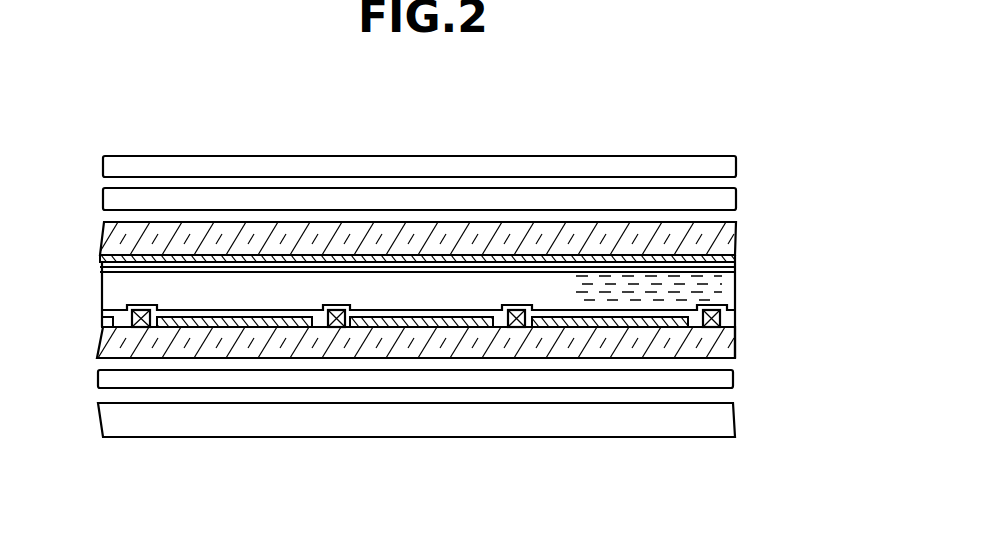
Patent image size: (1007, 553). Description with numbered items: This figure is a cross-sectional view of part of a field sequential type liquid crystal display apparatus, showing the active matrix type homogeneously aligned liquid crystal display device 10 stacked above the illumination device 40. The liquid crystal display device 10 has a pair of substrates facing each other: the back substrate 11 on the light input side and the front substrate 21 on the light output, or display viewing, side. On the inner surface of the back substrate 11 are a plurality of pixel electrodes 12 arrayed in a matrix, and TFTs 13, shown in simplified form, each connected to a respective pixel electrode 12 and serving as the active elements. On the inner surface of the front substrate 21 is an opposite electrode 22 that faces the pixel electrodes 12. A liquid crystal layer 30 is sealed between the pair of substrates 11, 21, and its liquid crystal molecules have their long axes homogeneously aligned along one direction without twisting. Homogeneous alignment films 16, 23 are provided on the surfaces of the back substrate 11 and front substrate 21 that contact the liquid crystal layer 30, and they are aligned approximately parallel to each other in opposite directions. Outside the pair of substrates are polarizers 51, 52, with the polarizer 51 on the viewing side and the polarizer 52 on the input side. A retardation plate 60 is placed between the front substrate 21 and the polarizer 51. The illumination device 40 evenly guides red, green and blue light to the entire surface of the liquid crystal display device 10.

The liquid crystal display device 10 is at (95, 157).
The back substrate 11 is at (722, 343).
The pixel electrodes 12 is at (232, 327).
The TFTs 13 is at (143, 327).
The homogeneous alignment film 16 is at (322, 317).
The front substrate 21 is at (722, 240).
The opposite electrode 22 is at (307, 258).
The homogeneous alignment film 23 is at (408, 268).
The liquid crystal layer 30 is at (722, 290).
The illumination device 40 is at (722, 422).
The polarizer 51 is at (722, 166).
The polarizer 52 is at (722, 382).
The retardation plate 60 is at (722, 197).